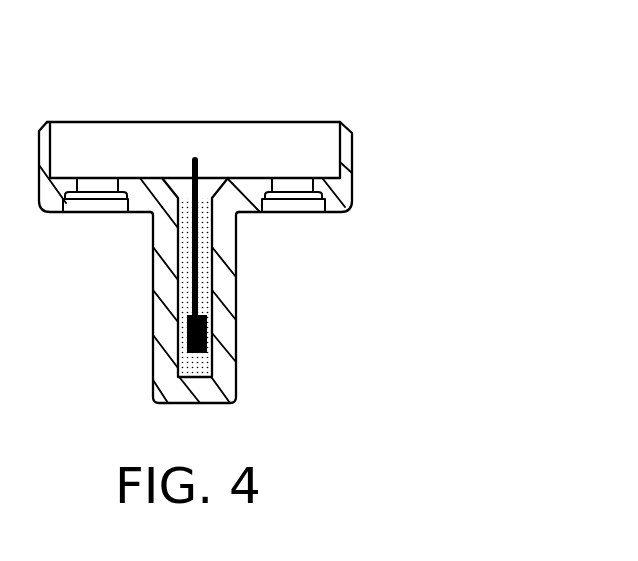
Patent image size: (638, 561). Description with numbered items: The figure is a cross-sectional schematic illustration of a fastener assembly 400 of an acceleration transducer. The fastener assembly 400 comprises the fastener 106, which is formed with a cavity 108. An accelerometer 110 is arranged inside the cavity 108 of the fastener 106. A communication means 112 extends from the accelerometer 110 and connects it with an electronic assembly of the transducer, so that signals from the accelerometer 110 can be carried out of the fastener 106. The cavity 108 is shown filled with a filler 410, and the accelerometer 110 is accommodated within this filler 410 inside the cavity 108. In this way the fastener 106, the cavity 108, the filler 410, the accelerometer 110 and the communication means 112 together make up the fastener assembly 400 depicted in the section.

The fastener assembly 400 is at (366, 54).
The fastener 106 is at (372, 160).
The cavity 108 is at (153, 295).
The filler 410 is at (202, 368).
The accelerometer 110 is at (207, 333).
The communication means 112 is at (198, 289).